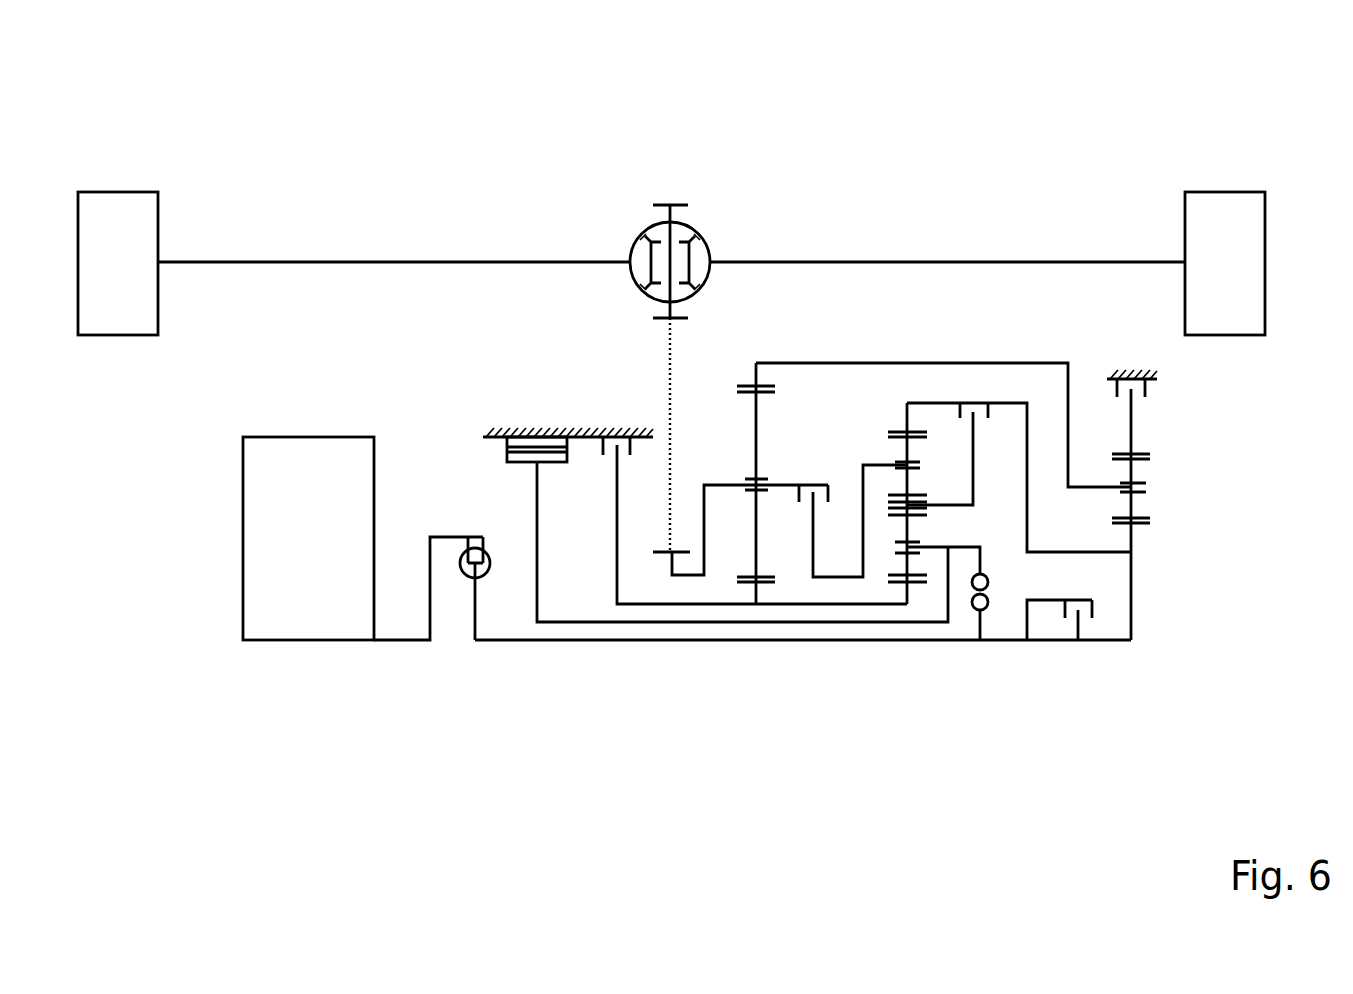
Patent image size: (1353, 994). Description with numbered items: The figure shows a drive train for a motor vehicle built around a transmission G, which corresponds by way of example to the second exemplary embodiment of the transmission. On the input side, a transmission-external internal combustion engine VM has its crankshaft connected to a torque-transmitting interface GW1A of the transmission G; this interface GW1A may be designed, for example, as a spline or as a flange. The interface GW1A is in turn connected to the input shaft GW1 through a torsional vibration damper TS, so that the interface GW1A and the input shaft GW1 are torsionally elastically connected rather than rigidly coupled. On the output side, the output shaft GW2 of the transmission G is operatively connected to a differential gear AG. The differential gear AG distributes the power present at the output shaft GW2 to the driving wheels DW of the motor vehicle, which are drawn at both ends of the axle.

The driving wheels DW is at (118, 192).
The differential gear AG is at (698, 210).
The internal combustion engine VM is at (282, 640).
The torque-transmitting interface GW1A is at (402, 640).
The torsional vibration damper TS is at (467, 592).
The input shaft GW1 is at (542, 640).
The output shaft GW2 is at (685, 577).
The transmission G is at (791, 668).